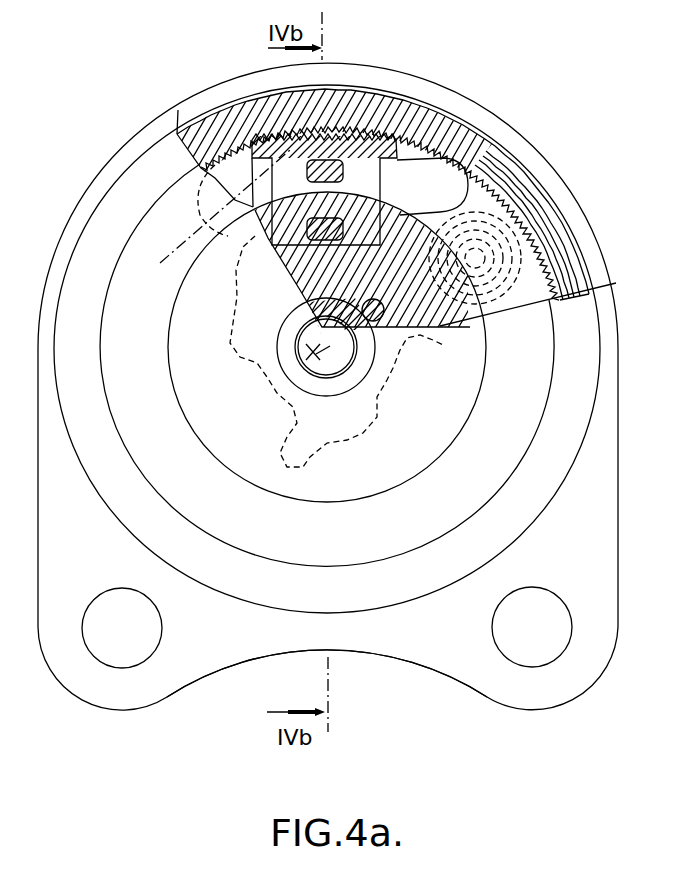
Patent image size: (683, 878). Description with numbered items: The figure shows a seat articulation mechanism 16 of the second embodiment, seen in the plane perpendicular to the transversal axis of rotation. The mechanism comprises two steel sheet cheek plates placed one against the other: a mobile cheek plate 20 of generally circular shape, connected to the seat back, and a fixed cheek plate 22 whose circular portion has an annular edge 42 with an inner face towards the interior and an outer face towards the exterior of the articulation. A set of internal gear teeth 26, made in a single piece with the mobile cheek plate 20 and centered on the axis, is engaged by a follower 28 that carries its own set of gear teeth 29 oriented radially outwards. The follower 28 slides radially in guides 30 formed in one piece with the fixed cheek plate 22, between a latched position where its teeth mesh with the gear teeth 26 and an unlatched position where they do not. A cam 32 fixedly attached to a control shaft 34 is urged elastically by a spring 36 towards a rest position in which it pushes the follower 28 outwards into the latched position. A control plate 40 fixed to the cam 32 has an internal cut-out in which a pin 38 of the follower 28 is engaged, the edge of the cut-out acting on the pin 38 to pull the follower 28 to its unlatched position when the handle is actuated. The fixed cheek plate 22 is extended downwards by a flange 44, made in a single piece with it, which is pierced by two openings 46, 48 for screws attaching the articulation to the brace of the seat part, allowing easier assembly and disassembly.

The articulation mechanism 16 is at (122, 122).
The mobile cheek plate 20 is at (527, 207).
The fixed cheek plate 22 is at (200, 107).
The set of gear teeth 26 is at (487, 190).
The follower 28 is at (288, 170).
The set of gear teeth 29 is at (340, 125).
The guides 30 is at (385, 198).
The cam 32 is at (392, 372).
The control shaft 34 is at (333, 361).
The spring 36 is at (589, 294).
The pin 38 is at (283, 128).
The control plate 40 is at (392, 175).
The annular edge 42 is at (480, 123).
The flange 44 is at (107, 690).
The opening 46 is at (138, 640).
The opening 48 is at (538, 640).